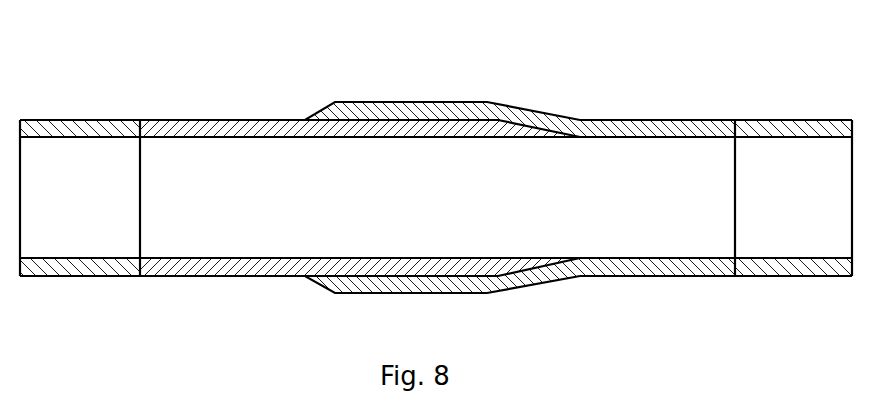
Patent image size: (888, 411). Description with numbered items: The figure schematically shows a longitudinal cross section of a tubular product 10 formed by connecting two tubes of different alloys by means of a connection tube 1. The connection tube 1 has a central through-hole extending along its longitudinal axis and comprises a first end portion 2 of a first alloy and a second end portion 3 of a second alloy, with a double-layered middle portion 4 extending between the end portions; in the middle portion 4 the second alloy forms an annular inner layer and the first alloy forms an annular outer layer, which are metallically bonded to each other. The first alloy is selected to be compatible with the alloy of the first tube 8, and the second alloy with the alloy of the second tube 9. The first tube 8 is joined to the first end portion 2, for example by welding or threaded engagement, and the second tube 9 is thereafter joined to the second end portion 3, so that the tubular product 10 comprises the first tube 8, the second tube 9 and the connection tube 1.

The connection tube 1 is at (283, 128).
The first end portion 2 is at (642, 128).
The second end portion 3 is at (188, 128).
The middle portion 4 is at (433, 108).
The first tube 8 is at (808, 130).
The second tube 9 is at (90, 125).
The tubular product 10 is at (183, 305).